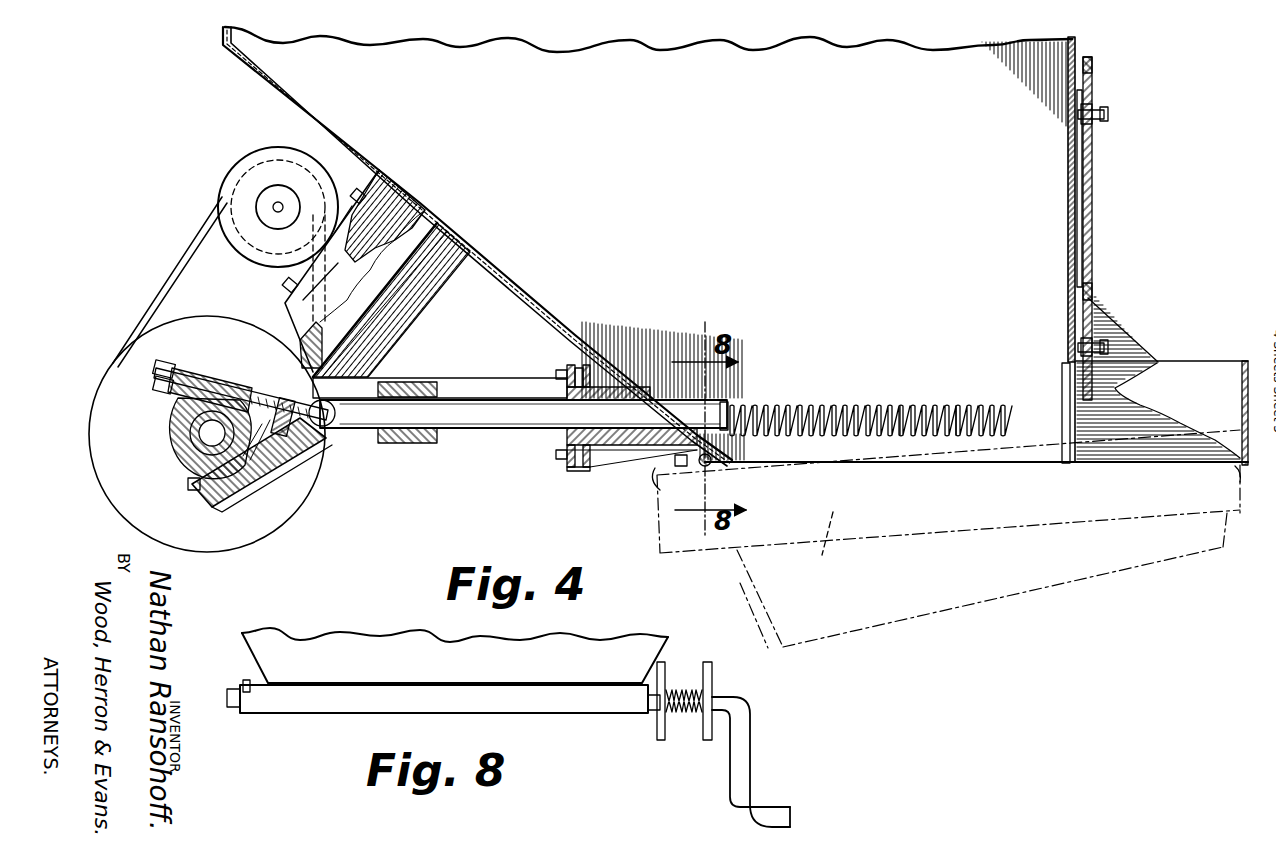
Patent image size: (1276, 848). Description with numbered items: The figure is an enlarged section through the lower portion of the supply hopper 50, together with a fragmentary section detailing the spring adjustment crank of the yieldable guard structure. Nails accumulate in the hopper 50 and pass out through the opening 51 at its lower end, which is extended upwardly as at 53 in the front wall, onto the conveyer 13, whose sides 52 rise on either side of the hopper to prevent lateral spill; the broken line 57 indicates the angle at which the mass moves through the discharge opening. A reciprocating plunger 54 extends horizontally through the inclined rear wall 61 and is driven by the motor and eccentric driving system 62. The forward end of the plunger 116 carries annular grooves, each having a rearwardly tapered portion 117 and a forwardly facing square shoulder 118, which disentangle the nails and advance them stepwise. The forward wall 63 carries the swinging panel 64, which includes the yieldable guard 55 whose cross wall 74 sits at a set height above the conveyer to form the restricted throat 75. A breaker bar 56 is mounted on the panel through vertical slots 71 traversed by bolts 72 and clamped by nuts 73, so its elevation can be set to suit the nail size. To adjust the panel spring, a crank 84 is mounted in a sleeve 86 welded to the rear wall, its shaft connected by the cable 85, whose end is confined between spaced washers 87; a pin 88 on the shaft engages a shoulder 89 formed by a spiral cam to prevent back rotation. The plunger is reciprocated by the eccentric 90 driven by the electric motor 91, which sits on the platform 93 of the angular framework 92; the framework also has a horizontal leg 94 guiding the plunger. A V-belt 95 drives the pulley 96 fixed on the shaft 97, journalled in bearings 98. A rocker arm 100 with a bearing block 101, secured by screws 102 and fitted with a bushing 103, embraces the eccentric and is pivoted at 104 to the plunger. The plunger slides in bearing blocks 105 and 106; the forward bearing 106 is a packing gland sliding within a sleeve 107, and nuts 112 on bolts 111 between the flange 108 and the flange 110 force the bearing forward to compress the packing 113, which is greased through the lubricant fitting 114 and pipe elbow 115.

In FIG. 4, the conveyer 13 is at (1231, 519).
In FIG. 4, the supply hopper 50 is at (301, 77).
In FIG. 4, the opening 51 is at (950, 465).
In FIG. 4, the sides of the conveyer trough 52 is at (822, 546).
In FIG. 4, the upward extension of the opening 53 is at (1066, 410).
In FIG. 4, the reciprocating plunger 54 is at (709, 404).
In FIG. 4, the yieldable guard 55 is at (1186, 374).
In FIG. 4, the breaker bar 56 is at (1093, 190).
In FIG. 4, the broken line 57 is at (1165, 395).
In FIG. 4, the inclined rear wall 61 is at (527, 312).
In FIG. 8, the inclined rear wall 61 is at (400, 655).
In FIG. 4, the motor and eccentric driving system 62 is at (120, 383).
In FIG. 4, the forward wall 63 is at (1067, 226).
In FIG. 4, the swinging panel 64 is at (1087, 170).
In FIG. 4, the vertical slots 71 is at (1093, 78).
In FIG. 4, the bolts 72 is at (1109, 115).
In FIG. 4, the nuts 73 is at (1092, 120).
In FIG. 4, the cross wall 74 is at (1241, 364).
In FIG. 4, the restricted throat 75 is at (1253, 480).
In FIG. 8, the crank 84 is at (752, 760).
In FIG. 8, the cable 85 is at (685, 690).
In FIG. 4, the sleeve 86 is at (712, 462).
In FIG. 8, the sleeve 86 is at (514, 699).
In FIG. 8, the spaced washers 87 is at (713, 680).
In FIG. 8, the pin 88 is at (238, 708).
In FIG. 8, the shoulder 89 is at (246, 680).
In FIG. 4, the eccentric 90 is at (286, 470).
In FIG. 4, the electric motor 91 is at (250, 165).
In FIG. 4, the angular framework 92 is at (414, 297).
In FIG. 4, the platform 93 is at (405, 200).
In FIG. 4, the horizontal leg 94 is at (515, 413).
In FIG. 4, the V-belt 95 is at (192, 250).
In FIG. 4, the pulley 96 is at (113, 456).
In FIG. 4, the shaft 97 is at (226, 500).
In FIG. 4, the bearings 98 is at (182, 412).
In FIG. 4, the rocker arm 100 is at (240, 372).
In FIG. 4, the bearing block 101 is at (183, 455).
In FIG. 4, the screws 102 is at (172, 362).
In FIG. 4, the bushing 103 is at (226, 385).
In FIG. 4, the pivot 104 is at (329, 430).
In FIG. 4, the bearing block 105 is at (418, 446).
In FIG. 4, the forward bearing 106 is at (625, 446).
In FIG. 4, the sleeve 107 is at (613, 386).
In FIG. 4, the flange 108 is at (600, 366).
In FIG. 4, the flange 110 is at (567, 478).
In FIG. 4, the bolts 111 is at (578, 364).
In FIG. 4, the nuts 112 is at (556, 374).
In FIG. 4, the packing 113 is at (650, 378).
In FIG. 4, the lubricant fitting 114 is at (660, 490).
In FIG. 4, the pipe elbow 115 is at (682, 466).
In FIG. 4, the forward end of the plunger 116 is at (831, 397).
In FIG. 4, the rearwardly tapered portion 117 is at (905, 405).
In FIG. 4, the square shoulder 118 is at (960, 405).